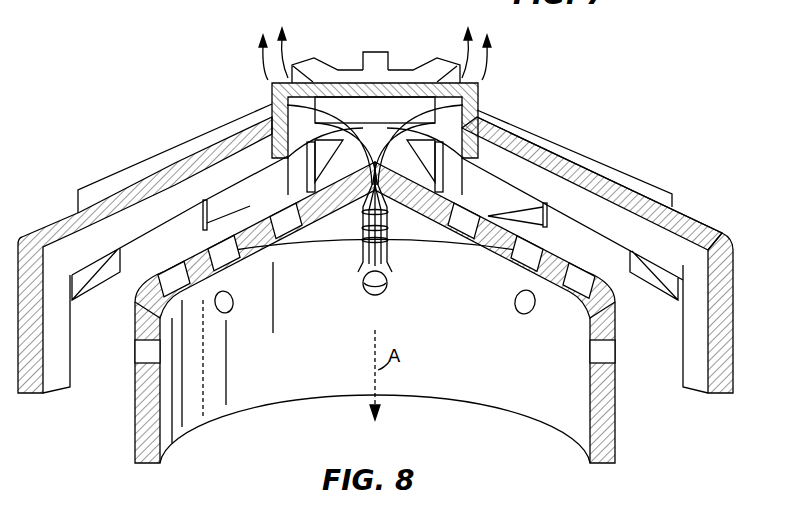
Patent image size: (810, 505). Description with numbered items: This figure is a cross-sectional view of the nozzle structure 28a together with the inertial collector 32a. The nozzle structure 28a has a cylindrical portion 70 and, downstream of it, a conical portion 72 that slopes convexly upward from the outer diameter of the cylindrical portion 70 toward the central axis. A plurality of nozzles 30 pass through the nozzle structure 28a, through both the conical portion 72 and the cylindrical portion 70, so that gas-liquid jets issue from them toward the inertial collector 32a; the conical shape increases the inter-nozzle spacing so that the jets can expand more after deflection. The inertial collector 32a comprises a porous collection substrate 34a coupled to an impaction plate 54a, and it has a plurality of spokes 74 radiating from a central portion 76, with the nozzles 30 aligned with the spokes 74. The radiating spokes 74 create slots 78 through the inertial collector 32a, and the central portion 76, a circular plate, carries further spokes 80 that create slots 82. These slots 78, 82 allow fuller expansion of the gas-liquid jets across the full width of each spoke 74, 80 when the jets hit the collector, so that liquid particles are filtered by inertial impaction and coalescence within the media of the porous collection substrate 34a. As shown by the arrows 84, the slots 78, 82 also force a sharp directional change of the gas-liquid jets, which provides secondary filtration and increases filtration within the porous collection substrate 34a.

The nozzle structure 28a is at (122, 413).
The nozzles 30 is at (290, 230).
The inertial collector 32a is at (623, 155).
The porous collection substrate 34a is at (693, 338).
The impaction plate 54a is at (720, 362).
The cylindrical portion 70 is at (617, 433).
The conical portion 72 is at (200, 250).
The spokes 74 is at (62, 213).
The central portion 76 is at (373, 80).
The slots 78 is at (687, 207).
The spokes 80 is at (375, 52).
The slots 82 is at (343, 62).
The arrows 84 is at (266, 76).